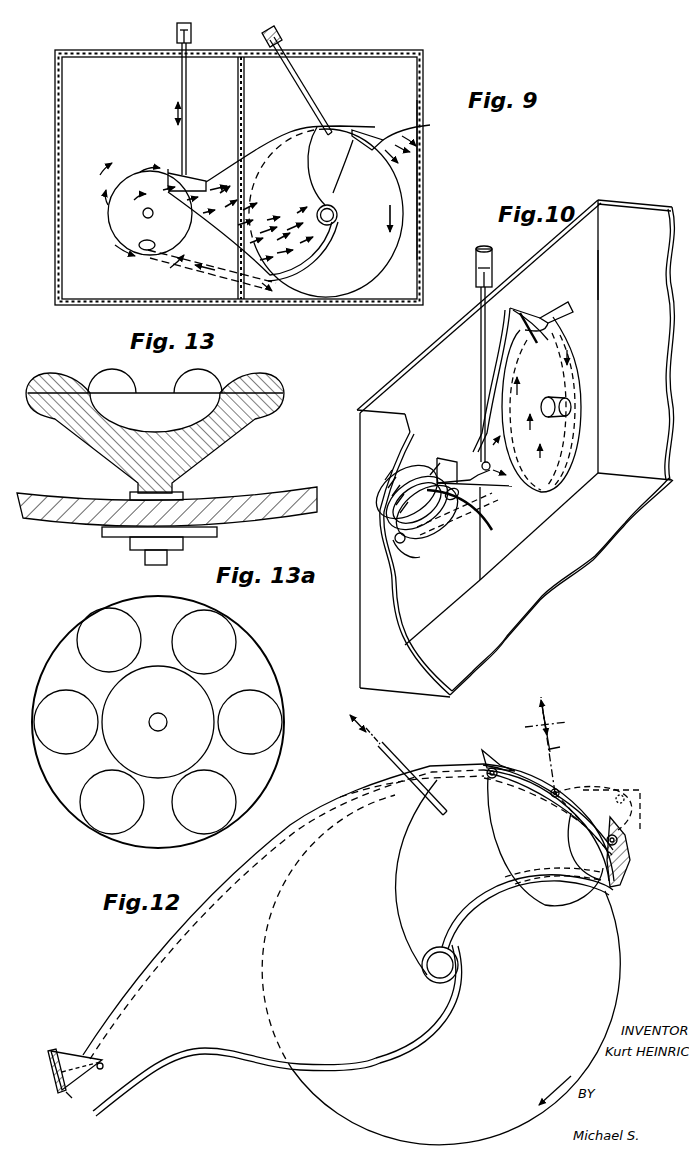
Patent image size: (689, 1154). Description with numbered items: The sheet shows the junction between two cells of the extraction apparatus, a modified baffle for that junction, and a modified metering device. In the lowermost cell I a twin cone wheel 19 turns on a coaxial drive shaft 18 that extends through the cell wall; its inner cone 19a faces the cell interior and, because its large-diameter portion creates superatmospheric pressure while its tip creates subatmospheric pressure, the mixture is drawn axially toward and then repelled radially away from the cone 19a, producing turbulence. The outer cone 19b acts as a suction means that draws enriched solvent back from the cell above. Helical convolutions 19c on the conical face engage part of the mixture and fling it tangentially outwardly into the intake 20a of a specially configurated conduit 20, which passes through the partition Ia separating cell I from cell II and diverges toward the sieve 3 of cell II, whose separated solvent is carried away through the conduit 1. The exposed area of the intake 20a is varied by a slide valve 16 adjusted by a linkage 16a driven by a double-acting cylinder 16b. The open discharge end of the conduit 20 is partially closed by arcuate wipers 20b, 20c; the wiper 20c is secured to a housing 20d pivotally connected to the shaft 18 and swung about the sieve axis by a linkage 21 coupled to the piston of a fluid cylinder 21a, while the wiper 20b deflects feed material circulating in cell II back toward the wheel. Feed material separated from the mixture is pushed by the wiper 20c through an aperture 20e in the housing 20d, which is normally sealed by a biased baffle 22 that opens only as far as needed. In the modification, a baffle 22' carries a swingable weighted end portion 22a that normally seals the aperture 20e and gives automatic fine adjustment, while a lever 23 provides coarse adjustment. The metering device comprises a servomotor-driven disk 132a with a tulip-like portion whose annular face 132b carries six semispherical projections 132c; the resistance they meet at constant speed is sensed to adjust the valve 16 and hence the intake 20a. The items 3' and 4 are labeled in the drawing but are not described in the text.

In FIG. 9, the cell I is at (239, 177).
In FIG. 10, the cell I is at (515, 448).
In FIG. 13, the cell I is at (255, 496).
In FIG. 9, the partition Ia is at (240, 80).
In FIG. 9, the cell II is at (393, 172).
In FIG. 10, the cell II is at (575, 275).
In FIG. 9, the conduit 1 is at (182, 262).
In FIG. 9, the sieve 3 is at (326, 213).
In FIG. 10, the sieve 3 is at (533, 400).
In FIG. 9, the central outlet of cyclone 3' is at (342, 216).
In FIG. 12, the cyclone housing 4 is at (623, 957).
In FIG. 9, the slide valve 16 is at (190, 180).
In FIG. 10, the slide valve 16 is at (447, 462).
In FIG. 12, the slide valve 16 is at (55, 1050).
In FIG. 9, the linkage 16a is at (182, 80).
In FIG. 9, the double-acting hydraulic or pneumatic cylinder 16b is at (177, 30).
In FIG. 12, the drive shaft 18 is at (458, 959).
In FIG. 9, the twin cone wheel 19 is at (133, 172).
In FIG. 10, the twin cone wheel 19 is at (420, 458).
In FIG. 9, the cone 19a is at (112, 198).
In FIG. 10, the cone 19a is at (431, 530).
In FIG. 10, the cone 19b is at (398, 490).
In FIG. 10, the helical convolutions 19c is at (476, 515).
In FIG. 9, the conduit 20 is at (263, 148).
In FIG. 12, the conduit 20 is at (157, 955).
In FIG. 9, the intake 20a is at (343, 110).
In FIG. 12, the intake 20a is at (76, 1100).
In FIG. 9, the arcuate wiper 20b is at (314, 253).
In FIG. 12, the arcuate wiper 20b is at (412, 1035).
In FIG. 9, the arcuate wiper 20c is at (337, 175).
In FIG. 12, the arcuate wiper 20c is at (475, 886).
In FIG. 12, the housing 20d is at (398, 863).
In FIG. 9, the aperture 20e is at (386, 129).
In FIG. 10, the aperture 20e is at (572, 318).
In FIG. 12, the aperture 20e is at (593, 893).
In FIG. 9, the linkage 21 is at (305, 86).
In FIG. 10, the linkage 21 is at (483, 340).
In FIG. 12, the linkage 21 is at (398, 759).
In FIG. 10, the double acting fluid cylinder 21a is at (476, 259).
In FIG. 9, the baffle 22 is at (374, 127).
In FIG. 10, the baffle 22 is at (556, 300).
In FIG. 12, the modified baffle 22' is at (561, 802).
In FIG. 12, the swingable weighted end portion 22a is at (622, 878).
In FIG. 12, the adjusting means 23 is at (556, 746).
In FIG. 13, the disk 132a is at (248, 424).
In FIG. 13A, the disk 132a is at (260, 773).
In FIG. 13, the annular face 132b is at (153, 392).
In FIG. 13A, the annular face 132b is at (256, 652).
In FIG. 13, the semispherical projections 132c is at (210, 379).
In FIG. 13A, the semispherical projections 132c is at (158, 721).